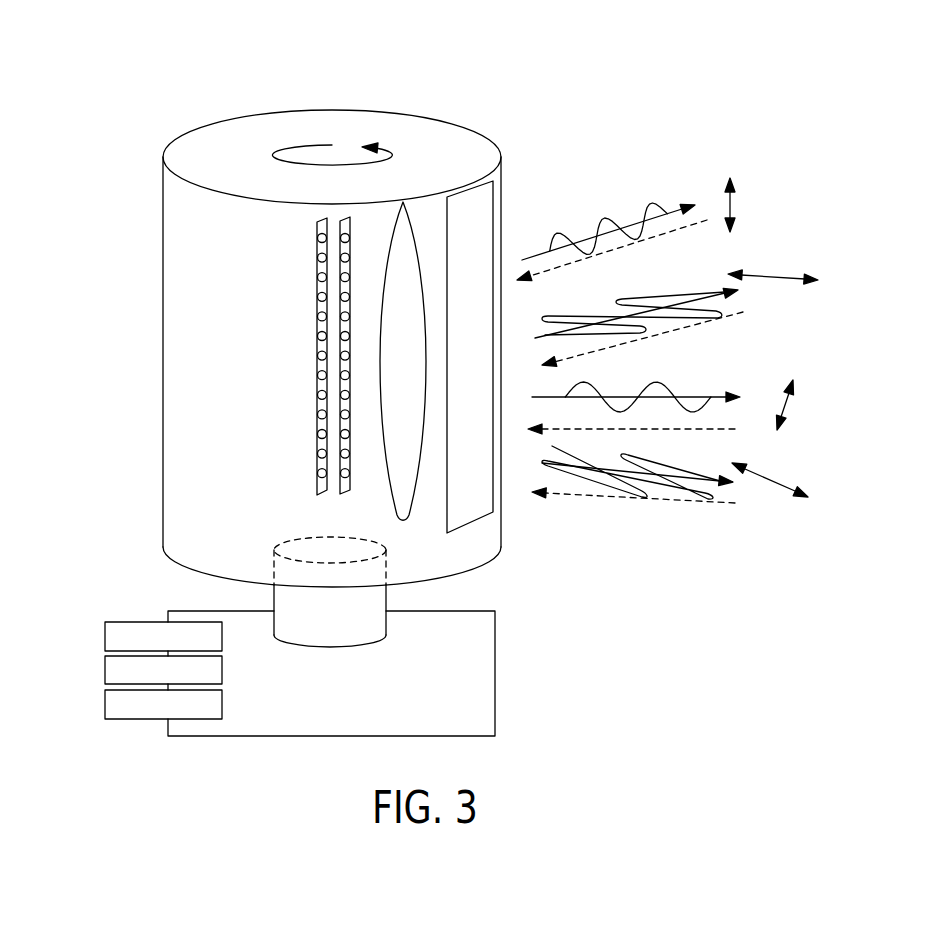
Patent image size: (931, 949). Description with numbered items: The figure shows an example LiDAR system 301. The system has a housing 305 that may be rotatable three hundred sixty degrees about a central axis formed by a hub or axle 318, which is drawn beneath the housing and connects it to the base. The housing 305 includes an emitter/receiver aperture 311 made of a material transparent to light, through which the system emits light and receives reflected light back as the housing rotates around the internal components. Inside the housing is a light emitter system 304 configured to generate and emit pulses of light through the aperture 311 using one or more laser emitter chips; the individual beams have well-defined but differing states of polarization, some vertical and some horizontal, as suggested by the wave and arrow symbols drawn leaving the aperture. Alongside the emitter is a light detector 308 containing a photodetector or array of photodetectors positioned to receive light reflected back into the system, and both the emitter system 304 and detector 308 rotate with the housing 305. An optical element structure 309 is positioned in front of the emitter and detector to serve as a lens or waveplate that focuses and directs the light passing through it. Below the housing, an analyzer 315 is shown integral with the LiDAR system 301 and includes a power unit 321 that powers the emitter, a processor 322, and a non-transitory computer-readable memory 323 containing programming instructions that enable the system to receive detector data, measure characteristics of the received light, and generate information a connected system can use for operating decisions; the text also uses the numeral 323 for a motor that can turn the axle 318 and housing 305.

The LiDAR system 301 is at (230, 72).
The light emitter system 304 is at (343, 222).
The housing 305 is at (163, 205).
The light detector 308 is at (317, 233).
The optical element structure 309 is at (405, 202).
The emitter/receiver aperture 311 is at (478, 183).
The analyzer 315 is at (497, 672).
The axle 318 is at (338, 632).
The power unit 321 is at (118, 637).
The processor 322 is at (118, 672).
The memory 323 is at (118, 706).